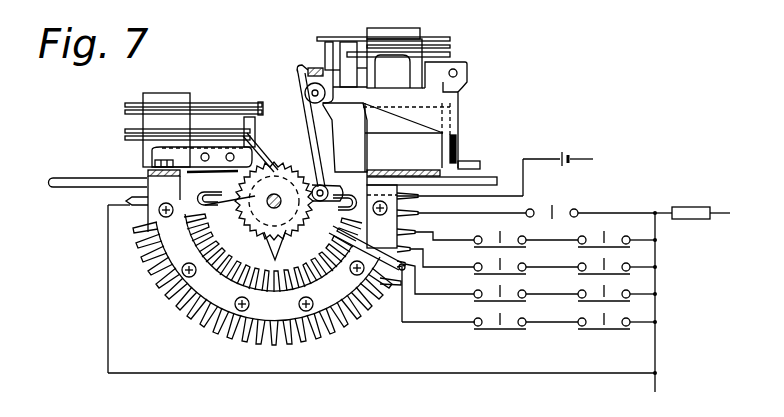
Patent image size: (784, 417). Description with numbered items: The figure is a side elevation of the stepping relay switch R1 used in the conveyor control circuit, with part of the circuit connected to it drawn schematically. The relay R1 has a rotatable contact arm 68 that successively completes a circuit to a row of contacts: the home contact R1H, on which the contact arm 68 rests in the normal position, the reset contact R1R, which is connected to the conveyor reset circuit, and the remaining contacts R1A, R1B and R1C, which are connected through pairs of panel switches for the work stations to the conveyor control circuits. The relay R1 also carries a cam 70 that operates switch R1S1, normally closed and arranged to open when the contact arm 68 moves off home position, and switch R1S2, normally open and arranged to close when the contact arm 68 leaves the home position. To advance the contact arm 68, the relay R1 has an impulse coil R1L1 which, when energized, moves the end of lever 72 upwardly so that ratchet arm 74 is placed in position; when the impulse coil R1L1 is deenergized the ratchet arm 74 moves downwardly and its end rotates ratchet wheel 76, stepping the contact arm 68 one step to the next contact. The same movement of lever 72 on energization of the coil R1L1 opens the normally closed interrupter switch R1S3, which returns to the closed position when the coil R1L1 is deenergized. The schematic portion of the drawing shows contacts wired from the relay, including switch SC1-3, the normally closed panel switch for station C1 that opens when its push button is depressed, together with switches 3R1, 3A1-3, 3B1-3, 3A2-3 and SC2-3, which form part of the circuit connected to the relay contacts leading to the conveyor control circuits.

The stepping relay switch R1 is at (97, 268).
The home contact R1H is at (128, 200).
The switch R1S2 is at (243, 140).
The switch R1S1 is at (253, 102).
The cam 70 is at (269, 158).
The ratchet arm 74 is at (345, 137).
The interrupter switch R1S3 is at (377, 100).
The lever 72 is at (435, 96).
The impulse coil R1L1 is at (428, 152).
The contact arm 68 is at (187, 236).
The ratchet wheel 76 is at (275, 211).
The reset contact R1R is at (461, 210).
The contact R1A is at (435, 229).
The contact R1B is at (413, 251).
The contact R1C is at (412, 268).
The relay contact 3R1 is at (557, 219).
The relay contact 3A1-3 is at (499, 233).
The relay contact 3B1-3 is at (500, 261).
The switch SC1-3 is at (514, 302).
The relay contact 3A2-3 is at (606, 242).
The relay contact SC2-3 is at (606, 296).